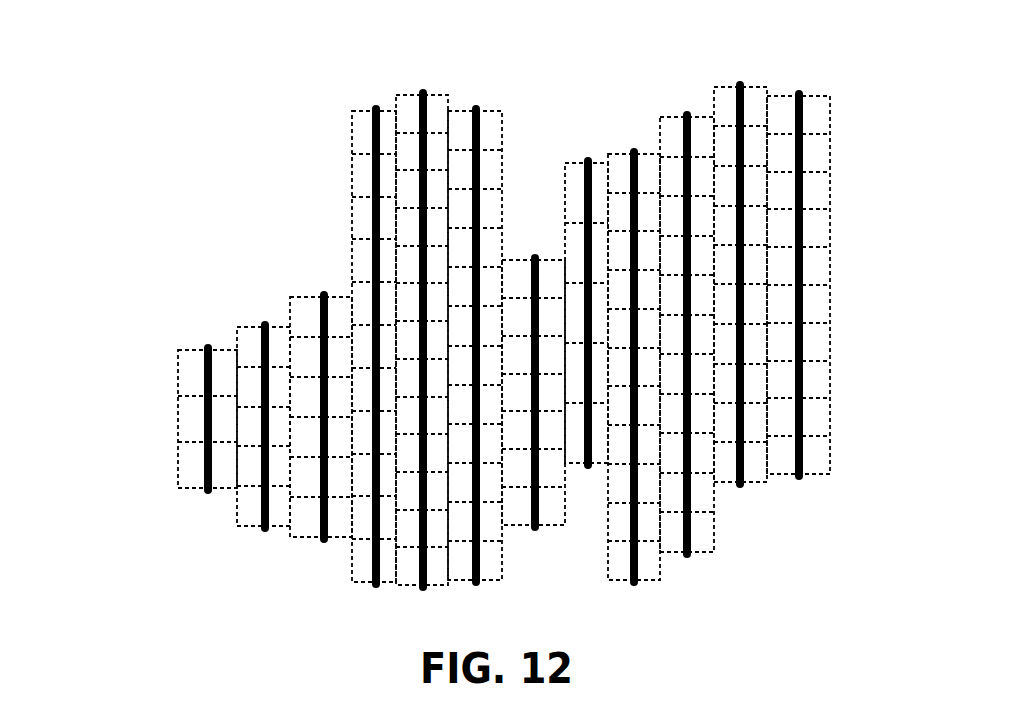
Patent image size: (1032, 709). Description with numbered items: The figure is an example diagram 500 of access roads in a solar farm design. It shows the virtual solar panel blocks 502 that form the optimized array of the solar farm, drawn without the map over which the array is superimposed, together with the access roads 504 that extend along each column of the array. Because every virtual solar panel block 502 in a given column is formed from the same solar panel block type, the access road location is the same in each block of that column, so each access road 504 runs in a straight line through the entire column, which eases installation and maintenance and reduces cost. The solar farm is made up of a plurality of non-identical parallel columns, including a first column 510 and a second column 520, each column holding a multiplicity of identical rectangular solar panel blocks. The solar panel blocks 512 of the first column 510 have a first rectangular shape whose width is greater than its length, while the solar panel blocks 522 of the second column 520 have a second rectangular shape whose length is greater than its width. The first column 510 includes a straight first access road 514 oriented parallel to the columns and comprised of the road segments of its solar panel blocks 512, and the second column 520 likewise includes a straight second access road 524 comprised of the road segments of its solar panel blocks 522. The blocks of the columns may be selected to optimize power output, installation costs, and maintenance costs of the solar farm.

The diagram 500 is at (166, 60).
The virtual solar panel blocks 502 is at (290, 302).
The access roads 504 is at (207, 380).
The first column 510 is at (363, 104).
The solar panel blocks of the first column 512 is at (371, 230).
The first access road 514 is at (355, 123).
The second column 520 is at (438, 92).
The solar panel blocks of the second column 522 is at (440, 227).
The second access road 524 is at (430, 112).